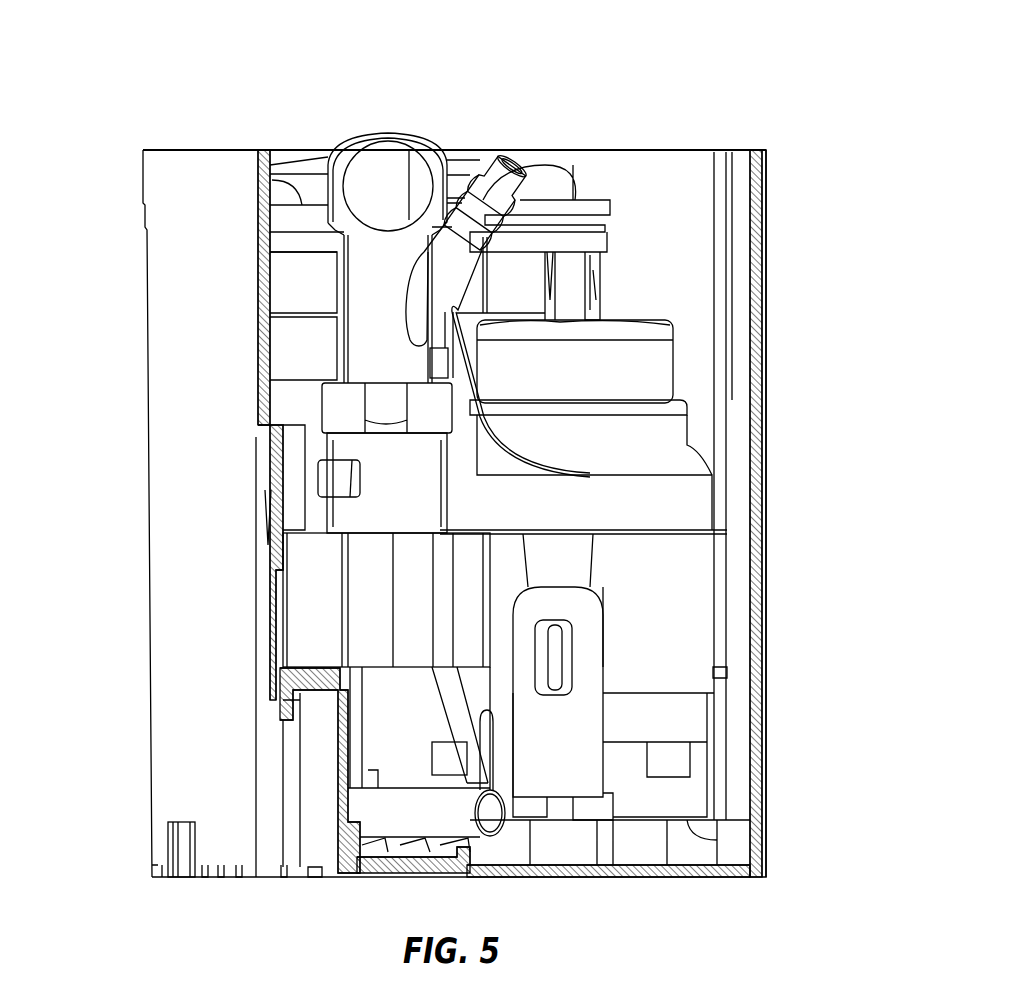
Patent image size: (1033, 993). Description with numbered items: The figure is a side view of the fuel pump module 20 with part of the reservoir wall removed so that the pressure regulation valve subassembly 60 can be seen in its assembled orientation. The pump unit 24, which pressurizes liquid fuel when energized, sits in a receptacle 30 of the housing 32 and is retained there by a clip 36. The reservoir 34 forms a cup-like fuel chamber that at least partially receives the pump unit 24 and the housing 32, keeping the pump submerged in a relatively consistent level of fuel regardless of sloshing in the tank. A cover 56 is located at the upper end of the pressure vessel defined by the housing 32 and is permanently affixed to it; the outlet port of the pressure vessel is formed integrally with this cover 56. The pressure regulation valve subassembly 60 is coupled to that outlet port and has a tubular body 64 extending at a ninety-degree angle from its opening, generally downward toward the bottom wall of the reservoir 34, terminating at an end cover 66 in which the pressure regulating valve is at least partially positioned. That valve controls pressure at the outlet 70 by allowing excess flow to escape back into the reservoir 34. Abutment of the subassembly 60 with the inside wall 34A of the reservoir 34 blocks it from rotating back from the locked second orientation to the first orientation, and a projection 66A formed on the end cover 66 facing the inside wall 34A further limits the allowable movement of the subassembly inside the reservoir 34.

The fuel pump module 20 is at (800, 97).
The pump unit 24 is at (650, 375).
The receptacle 30 is at (692, 497).
The housing 32 is at (283, 262).
The reservoir 34 is at (758, 600).
The inside wall 34A is at (293, 455).
The clip 36 is at (578, 680).
The cover 56 is at (305, 170).
The pressure regulation valve subassembly 60 is at (378, 175).
The tubular body 64 is at (360, 275).
The end cover 66 is at (357, 512).
The projection 66A is at (330, 473).
The outlet 70 is at (497, 190).